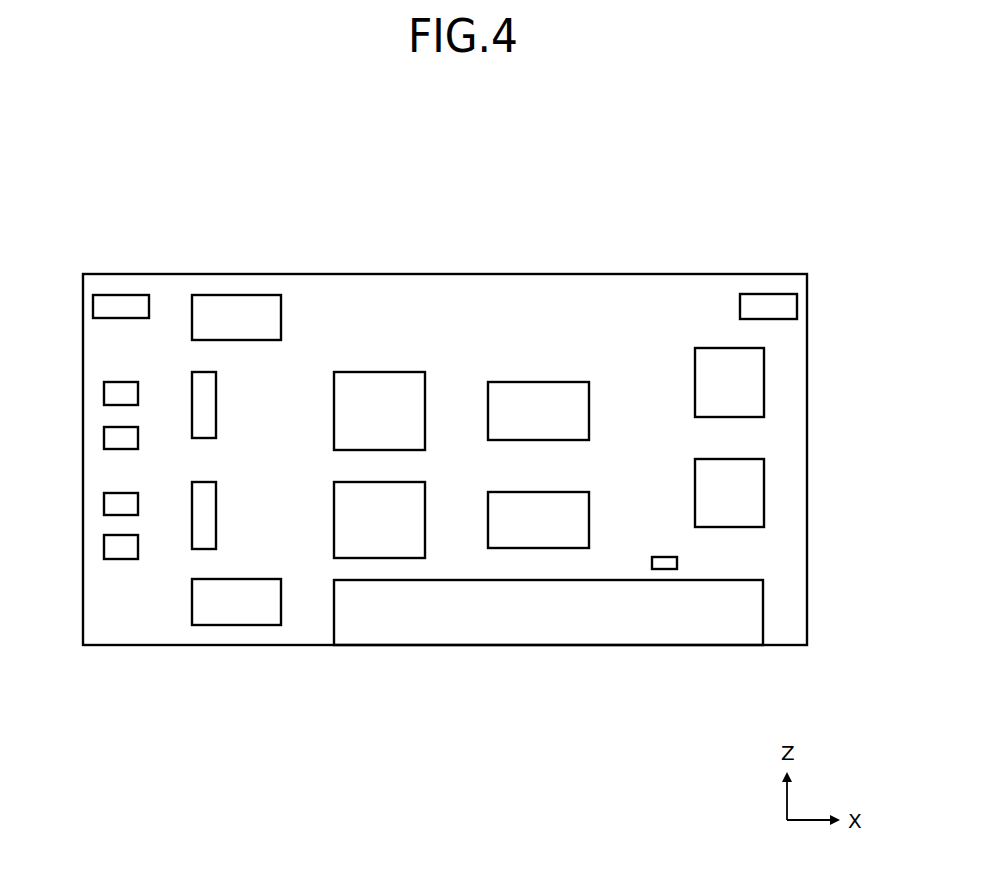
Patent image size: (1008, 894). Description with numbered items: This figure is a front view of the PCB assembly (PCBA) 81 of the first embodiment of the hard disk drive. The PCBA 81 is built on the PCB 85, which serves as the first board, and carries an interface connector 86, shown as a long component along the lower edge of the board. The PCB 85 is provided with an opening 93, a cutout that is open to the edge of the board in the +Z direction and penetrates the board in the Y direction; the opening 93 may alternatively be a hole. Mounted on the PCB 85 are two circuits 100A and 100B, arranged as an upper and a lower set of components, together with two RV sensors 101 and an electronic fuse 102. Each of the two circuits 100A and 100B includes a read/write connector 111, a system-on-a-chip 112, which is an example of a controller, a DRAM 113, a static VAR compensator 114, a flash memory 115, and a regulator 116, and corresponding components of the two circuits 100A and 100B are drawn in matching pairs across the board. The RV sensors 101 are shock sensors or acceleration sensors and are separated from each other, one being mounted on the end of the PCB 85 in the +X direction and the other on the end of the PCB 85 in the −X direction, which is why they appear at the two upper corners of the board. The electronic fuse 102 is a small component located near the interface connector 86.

The PCB assembly (PCBA) 81 is at (153, 178).
The PCB 85 is at (645, 292).
The interface (I/F) connector 86 is at (573, 625).
The opening 93 is at (336, 630).
The RV sensor 101 is at (122, 305).
The electronic fuse 102 is at (677, 563).
The read/write connector (R/W connector) 111 is at (200, 381).
The system-on-a-chip (SoC) 112 is at (411, 505).
The DRAM 113 is at (583, 505).
The static VAR compensator (SVC) 114 is at (705, 475).
The flash memory (FROM) 115 is at (120, 438).
The regulator 116 is at (245, 318).
The circuit 100A is at (786, 345).
The circuit 100B is at (786, 460).